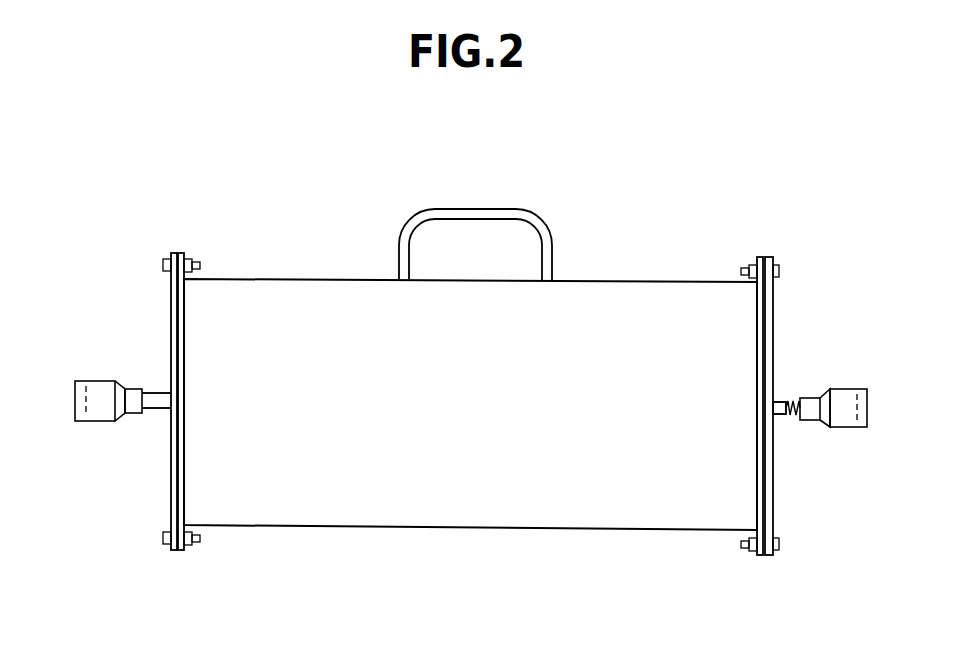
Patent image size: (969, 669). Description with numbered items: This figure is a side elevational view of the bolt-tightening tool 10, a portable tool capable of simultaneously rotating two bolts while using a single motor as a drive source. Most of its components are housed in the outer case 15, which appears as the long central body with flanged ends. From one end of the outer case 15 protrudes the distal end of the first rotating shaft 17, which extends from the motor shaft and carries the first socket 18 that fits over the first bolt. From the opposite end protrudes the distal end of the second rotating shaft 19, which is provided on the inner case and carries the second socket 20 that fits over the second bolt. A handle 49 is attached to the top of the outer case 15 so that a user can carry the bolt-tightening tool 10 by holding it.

The bolt-tightening tool 10 is at (754, 89).
The outer case 15 is at (579, 278).
The first rotating shaft 17 is at (780, 397).
The first socket 18 is at (860, 389).
The second rotating shaft 19 is at (153, 392).
The second socket 20 is at (84, 380).
The handle 49 is at (468, 209).